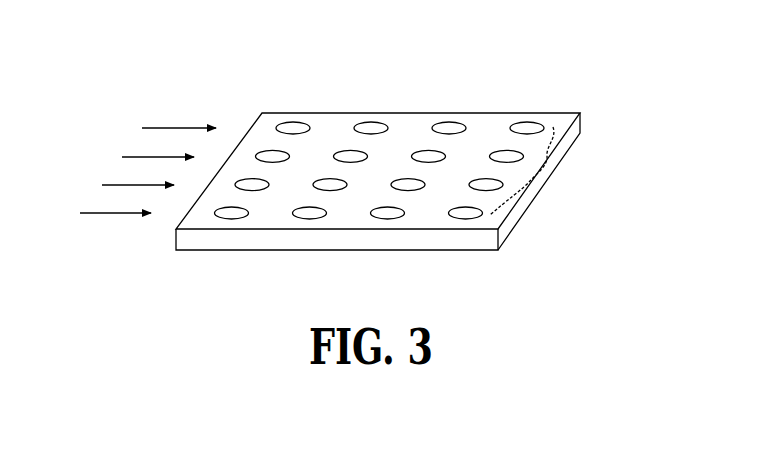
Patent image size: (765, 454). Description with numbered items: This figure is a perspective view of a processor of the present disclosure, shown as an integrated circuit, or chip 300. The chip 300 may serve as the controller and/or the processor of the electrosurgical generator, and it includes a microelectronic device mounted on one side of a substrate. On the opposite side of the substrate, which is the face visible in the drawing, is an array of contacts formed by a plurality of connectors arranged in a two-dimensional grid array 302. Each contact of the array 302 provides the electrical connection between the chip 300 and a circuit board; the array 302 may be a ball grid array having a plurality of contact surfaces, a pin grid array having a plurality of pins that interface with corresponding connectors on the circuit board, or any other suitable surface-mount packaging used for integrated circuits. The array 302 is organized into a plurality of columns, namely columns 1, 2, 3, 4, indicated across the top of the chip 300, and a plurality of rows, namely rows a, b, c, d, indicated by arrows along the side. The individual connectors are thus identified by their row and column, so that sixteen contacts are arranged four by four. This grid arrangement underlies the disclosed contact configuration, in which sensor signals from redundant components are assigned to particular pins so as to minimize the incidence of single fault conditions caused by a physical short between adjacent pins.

The chip 300 is at (206, 50).
The two-dimensional grid array 302 is at (553, 173).
The column 1 is at (298, 114).
The column 2 is at (377, 114).
The column 3 is at (455, 114).
The column 4 is at (534, 114).
The row a is at (166, 127).
The row b is at (144, 156).
The row c is at (124, 184).
The row d is at (101, 212).